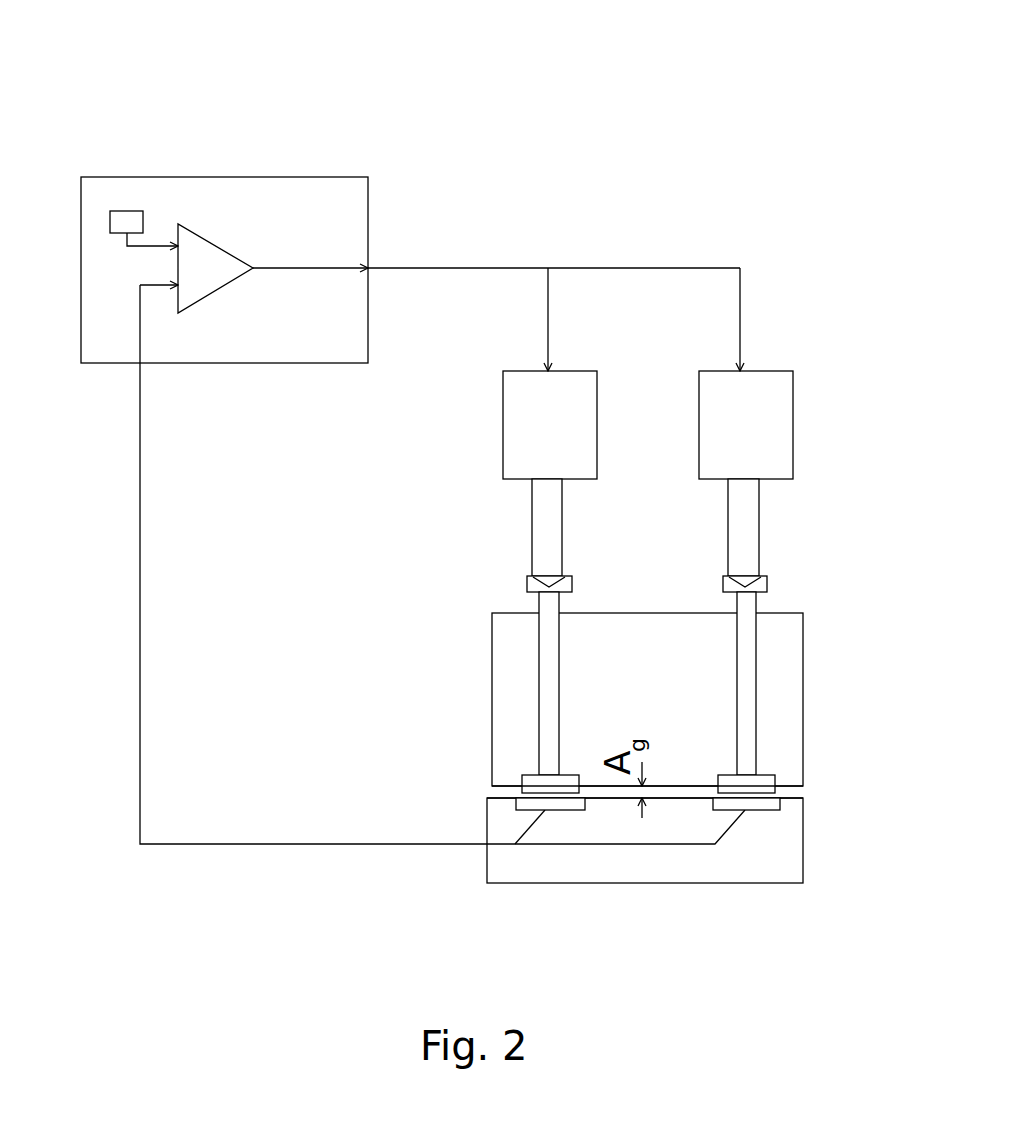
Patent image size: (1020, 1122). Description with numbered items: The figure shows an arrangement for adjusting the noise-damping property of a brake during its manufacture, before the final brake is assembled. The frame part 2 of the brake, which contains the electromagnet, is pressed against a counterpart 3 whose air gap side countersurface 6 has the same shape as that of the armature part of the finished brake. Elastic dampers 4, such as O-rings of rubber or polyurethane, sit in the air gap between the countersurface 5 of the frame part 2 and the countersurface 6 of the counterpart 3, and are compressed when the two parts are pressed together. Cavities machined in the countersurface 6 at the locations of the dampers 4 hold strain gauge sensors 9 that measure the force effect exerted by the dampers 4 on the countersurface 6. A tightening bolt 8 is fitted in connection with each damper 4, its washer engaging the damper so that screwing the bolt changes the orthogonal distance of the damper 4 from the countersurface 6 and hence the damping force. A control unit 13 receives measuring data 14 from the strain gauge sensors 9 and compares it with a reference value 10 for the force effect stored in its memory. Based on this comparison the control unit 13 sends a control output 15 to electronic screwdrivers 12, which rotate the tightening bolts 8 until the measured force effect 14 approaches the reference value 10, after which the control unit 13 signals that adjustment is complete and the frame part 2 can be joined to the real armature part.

The frame part 2 is at (805, 698).
The counterpart 3 is at (672, 882).
The elastic damper 4 is at (530, 775).
The countersurface of the frame part 5 is at (490, 790).
The countersurface of the counterpart 6 is at (803, 798).
The tightening bolt 8 is at (538, 683).
The strain gauge sensor 9 is at (525, 812).
The reference value 10 is at (125, 211).
The electronic screwdriver 12 is at (503, 425).
The control unit 13 is at (235, 177).
The measuring data 14 is at (265, 844).
The control line 15 is at (313, 268).